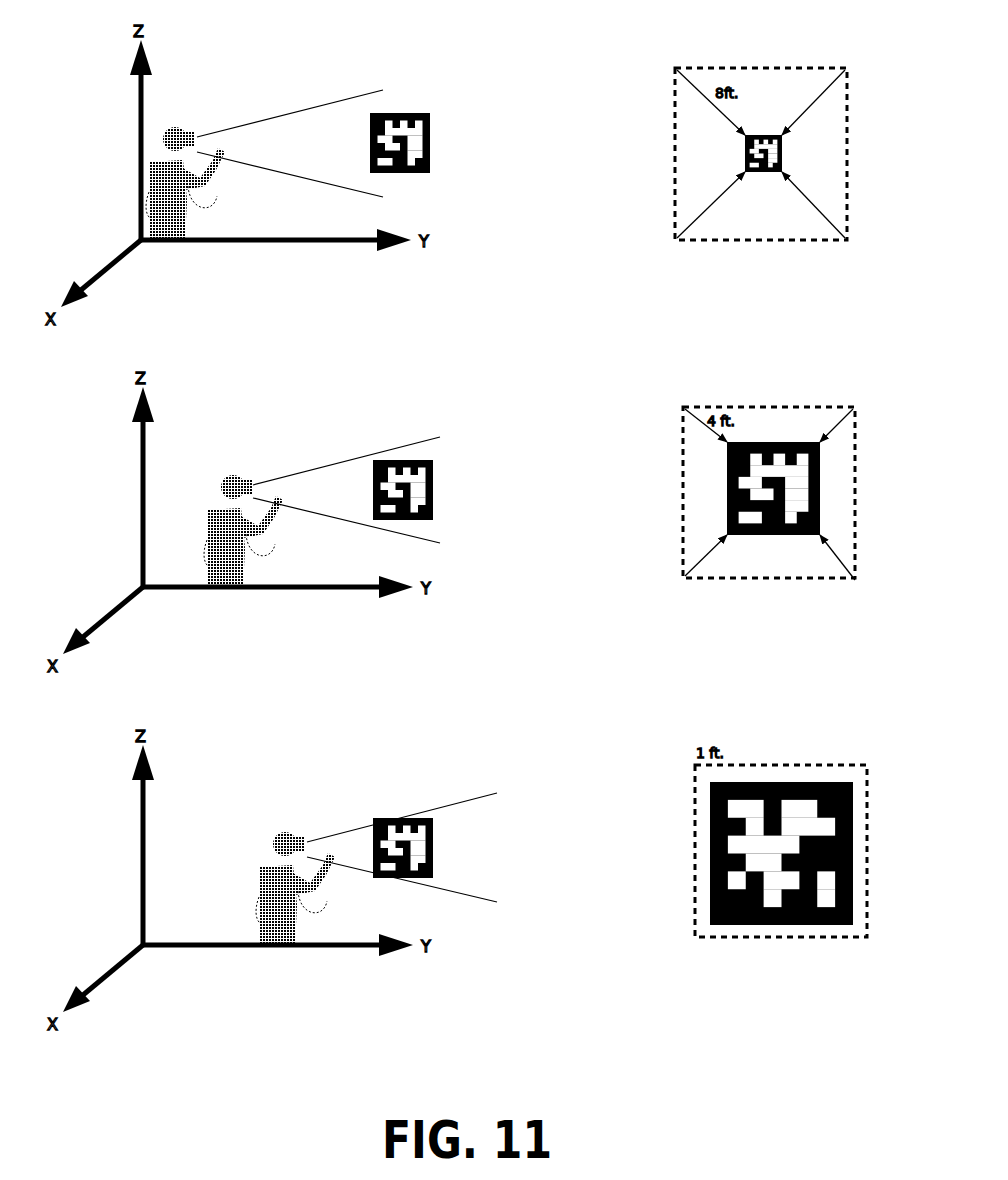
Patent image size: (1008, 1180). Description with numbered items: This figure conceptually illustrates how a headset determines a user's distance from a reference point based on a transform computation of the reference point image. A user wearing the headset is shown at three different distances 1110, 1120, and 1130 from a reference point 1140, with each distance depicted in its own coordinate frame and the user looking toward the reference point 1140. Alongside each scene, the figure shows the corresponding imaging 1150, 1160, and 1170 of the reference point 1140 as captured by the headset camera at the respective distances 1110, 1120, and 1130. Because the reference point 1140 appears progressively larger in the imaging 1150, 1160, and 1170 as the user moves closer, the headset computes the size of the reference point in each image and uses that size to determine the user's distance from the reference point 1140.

The first distance 1110 is at (167, 200).
The second distance 1120 is at (223, 547).
The third distance 1130 is at (277, 905).
The reference point 1140 is at (427, 113).
The imaging of the reference point at the first distance 1150 is at (745, 157).
The imaging of the reference point at the second distance 1160 is at (727, 496).
The imaging of the reference point at the third distance 1170 is at (710, 858).